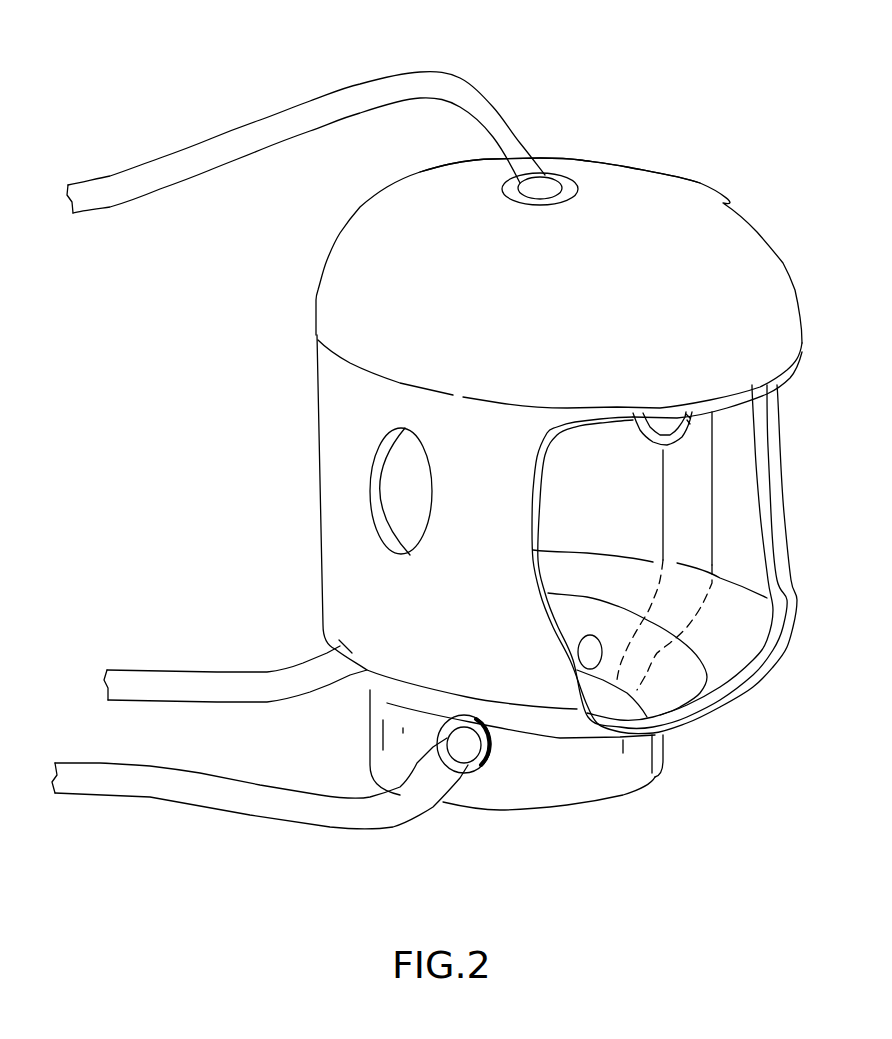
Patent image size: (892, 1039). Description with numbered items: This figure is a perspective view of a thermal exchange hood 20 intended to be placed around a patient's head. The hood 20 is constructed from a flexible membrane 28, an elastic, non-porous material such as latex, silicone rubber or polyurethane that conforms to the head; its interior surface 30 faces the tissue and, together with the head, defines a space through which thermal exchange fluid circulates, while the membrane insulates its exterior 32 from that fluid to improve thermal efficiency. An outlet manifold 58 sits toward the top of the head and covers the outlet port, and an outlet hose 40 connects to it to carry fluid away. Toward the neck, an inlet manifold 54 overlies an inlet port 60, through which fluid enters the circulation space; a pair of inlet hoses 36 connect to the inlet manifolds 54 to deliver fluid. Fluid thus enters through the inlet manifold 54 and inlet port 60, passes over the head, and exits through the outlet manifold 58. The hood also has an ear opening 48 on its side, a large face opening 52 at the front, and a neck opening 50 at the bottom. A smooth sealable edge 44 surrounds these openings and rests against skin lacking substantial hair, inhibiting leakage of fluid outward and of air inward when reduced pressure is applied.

The thermal exchange hood 20 is at (740, 122).
The flexible membrane 28 is at (773, 268).
The interior surface 30 is at (626, 497).
The exterior 32 is at (612, 259).
The inlet hoses 36 is at (128, 667).
The outlet hose 40 is at (443, 73).
The sealable edge 44 is at (686, 424).
The ear opening 48 is at (390, 480).
The neck opening 50 is at (617, 818).
The face opening 52 is at (805, 532).
The inlet manifold 54 is at (473, 772).
The outlet manifold 58 is at (562, 178).
The inlet port 60 is at (583, 650).